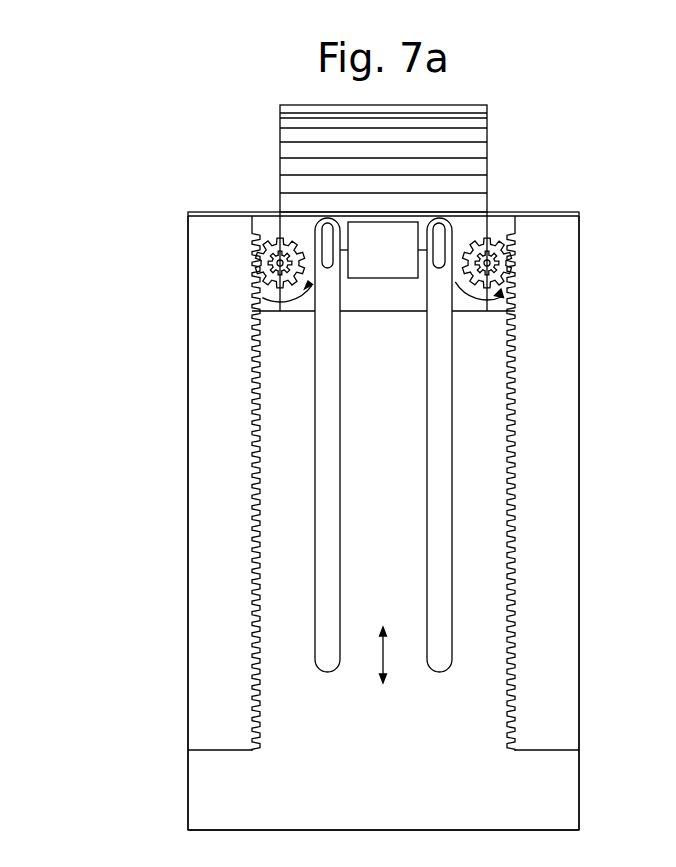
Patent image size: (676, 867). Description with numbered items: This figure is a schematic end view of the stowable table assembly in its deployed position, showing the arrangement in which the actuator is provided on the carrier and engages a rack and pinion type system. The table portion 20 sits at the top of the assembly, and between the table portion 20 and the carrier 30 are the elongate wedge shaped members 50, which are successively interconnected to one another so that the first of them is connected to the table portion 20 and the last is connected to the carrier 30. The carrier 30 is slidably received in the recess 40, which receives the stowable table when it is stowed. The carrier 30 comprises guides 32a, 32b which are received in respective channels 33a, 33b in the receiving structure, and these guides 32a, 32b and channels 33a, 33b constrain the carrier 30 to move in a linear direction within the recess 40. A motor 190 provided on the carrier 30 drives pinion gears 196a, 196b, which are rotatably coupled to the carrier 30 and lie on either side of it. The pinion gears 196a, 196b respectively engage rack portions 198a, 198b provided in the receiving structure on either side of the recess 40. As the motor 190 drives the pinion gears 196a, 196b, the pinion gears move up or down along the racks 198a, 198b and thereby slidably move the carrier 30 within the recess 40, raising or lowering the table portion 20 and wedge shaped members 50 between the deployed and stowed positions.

The table portion 20 is at (301, 106).
The wedge shaped members 50 is at (505, 148).
The carrier 30 is at (387, 300).
The guide 32a is at (452, 232).
The guide 32b is at (315, 232).
The channel 33a is at (452, 400).
The channel 33b is at (315, 414).
The recess 40 is at (397, 795).
The motor 190 is at (401, 263).
The pinion gear 196a is at (497, 263).
The pinion gear 196b is at (277, 265).
The rack portion 198a is at (537, 530).
The rack portion 198b is at (217, 530).